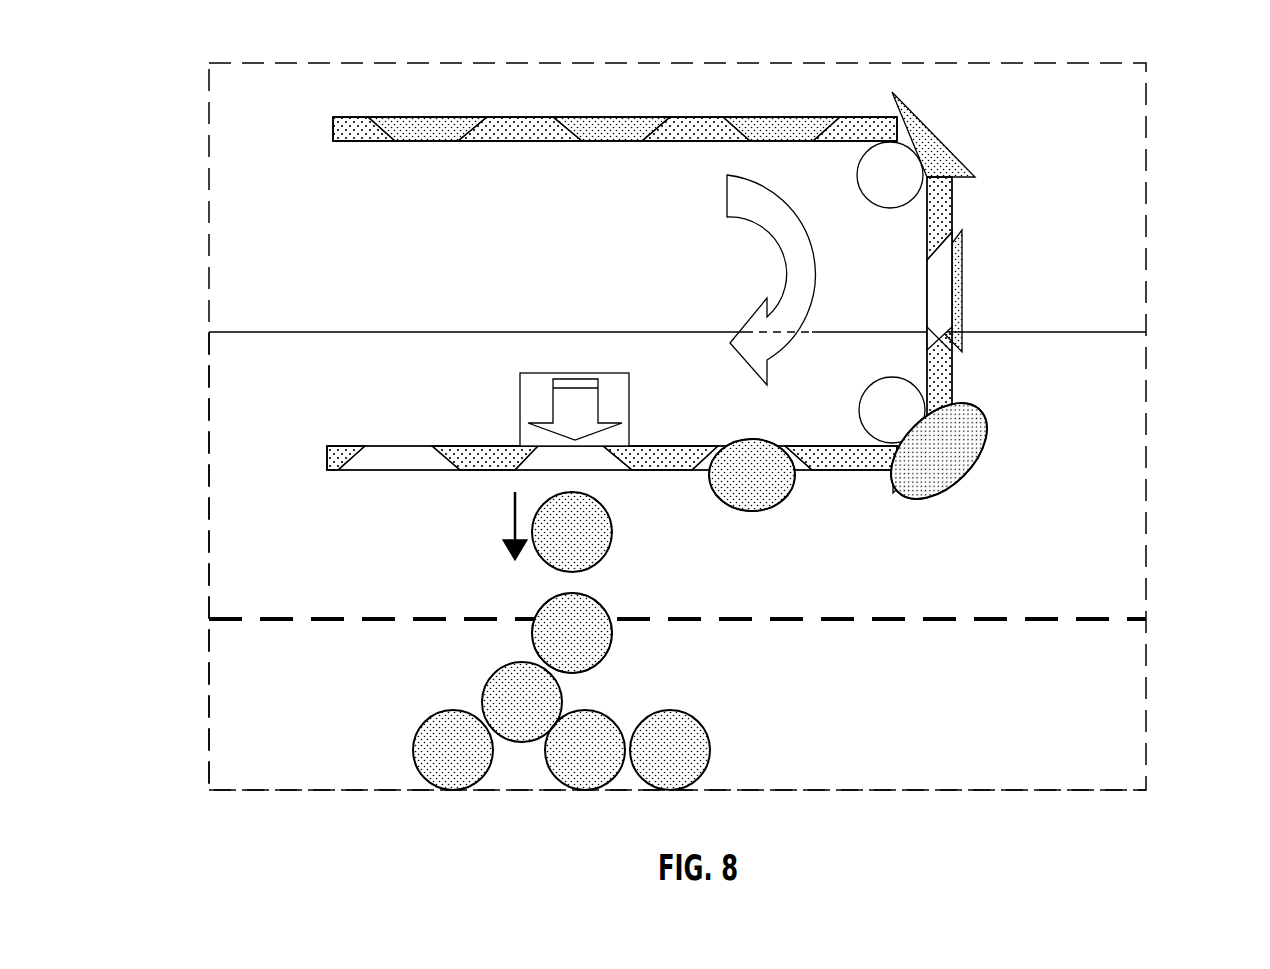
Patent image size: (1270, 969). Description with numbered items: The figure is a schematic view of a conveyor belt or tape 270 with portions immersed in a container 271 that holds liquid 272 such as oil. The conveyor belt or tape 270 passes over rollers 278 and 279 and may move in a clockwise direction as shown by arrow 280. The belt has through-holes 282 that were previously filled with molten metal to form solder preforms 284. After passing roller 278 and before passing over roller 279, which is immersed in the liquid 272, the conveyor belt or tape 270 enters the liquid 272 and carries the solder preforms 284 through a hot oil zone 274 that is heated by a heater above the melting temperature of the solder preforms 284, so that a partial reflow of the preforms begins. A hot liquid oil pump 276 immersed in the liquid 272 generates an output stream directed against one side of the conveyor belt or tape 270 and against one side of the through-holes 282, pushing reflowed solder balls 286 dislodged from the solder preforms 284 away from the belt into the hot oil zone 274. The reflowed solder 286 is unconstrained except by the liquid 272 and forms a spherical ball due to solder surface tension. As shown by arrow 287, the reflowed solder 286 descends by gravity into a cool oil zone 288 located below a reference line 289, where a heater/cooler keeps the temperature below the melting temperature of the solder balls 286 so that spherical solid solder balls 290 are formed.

The conveyor belt or tape 270 is at (604, 246).
The container 271 is at (208, 414).
The liquid 272 is at (225, 362).
The hot oil zone 274 is at (1137, 460).
The hot liquid oil pump 276 is at (520, 397).
The roller 278 is at (902, 197).
The roller 279 is at (898, 393).
The arrow 280 is at (800, 298).
The through-holes 282 is at (877, 125).
The solder preforms 284 is at (607, 117).
The reflowed solder balls 286 is at (783, 503).
The arrow 287 is at (512, 508).
The cool oil zone 288 is at (1137, 694).
The reference line 289 is at (980, 621).
The spherical solid solder balls 290 is at (432, 713).